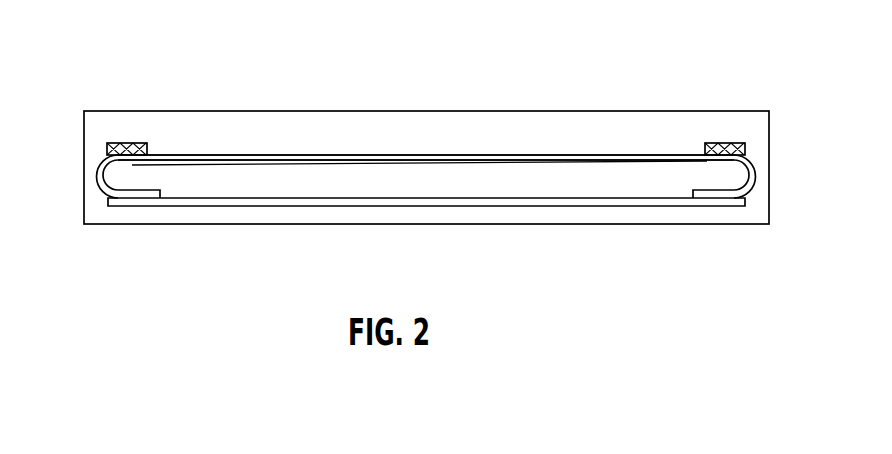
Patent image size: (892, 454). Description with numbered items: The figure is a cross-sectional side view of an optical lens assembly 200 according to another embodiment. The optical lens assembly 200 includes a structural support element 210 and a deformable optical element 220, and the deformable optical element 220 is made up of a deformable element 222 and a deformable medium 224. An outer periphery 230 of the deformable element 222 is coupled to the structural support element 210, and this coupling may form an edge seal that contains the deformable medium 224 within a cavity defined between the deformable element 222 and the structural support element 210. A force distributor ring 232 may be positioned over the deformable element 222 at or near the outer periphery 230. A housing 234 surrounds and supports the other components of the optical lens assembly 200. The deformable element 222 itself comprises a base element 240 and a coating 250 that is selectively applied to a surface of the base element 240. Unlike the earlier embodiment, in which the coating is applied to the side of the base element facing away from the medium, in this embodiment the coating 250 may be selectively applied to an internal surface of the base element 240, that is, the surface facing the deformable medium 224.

The optical lens assembly 200 is at (154, 47).
The structural support element 210 is at (303, 200).
The deformable optical element 220 is at (426, 86).
The deformable element 222 is at (365, 155).
The deformable medium 224 is at (368, 60).
The outer periphery 230 is at (100, 183).
The force distributor ring 232 is at (107, 152).
The housing 234 is at (752, 110).
The base element 240 is at (608, 156).
The coating 250 is at (683, 157).